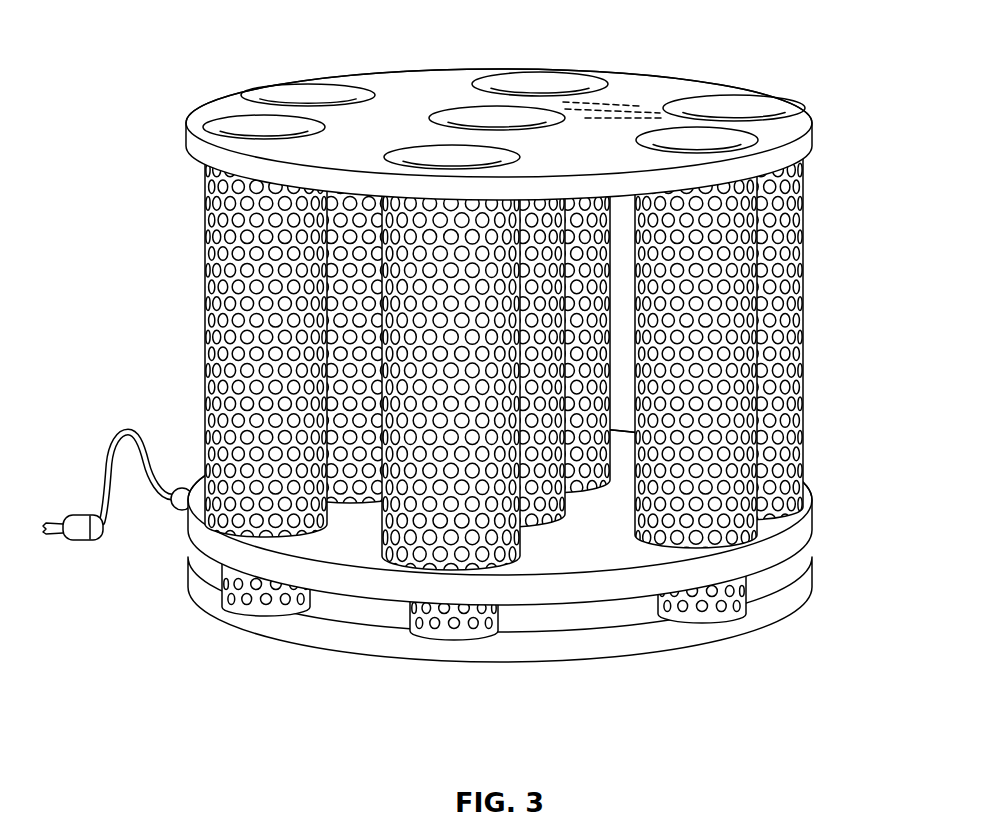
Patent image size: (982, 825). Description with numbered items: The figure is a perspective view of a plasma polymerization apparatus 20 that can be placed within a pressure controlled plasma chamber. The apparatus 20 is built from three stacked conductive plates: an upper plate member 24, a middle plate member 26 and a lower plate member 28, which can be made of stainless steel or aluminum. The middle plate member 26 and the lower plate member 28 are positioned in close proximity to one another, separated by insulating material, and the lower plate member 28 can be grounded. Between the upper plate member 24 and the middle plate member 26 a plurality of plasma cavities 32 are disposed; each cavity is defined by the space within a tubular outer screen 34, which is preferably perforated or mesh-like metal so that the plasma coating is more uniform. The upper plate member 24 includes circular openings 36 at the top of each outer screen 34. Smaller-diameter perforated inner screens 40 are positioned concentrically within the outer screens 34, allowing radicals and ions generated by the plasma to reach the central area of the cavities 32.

The plasma polymerization apparatus 20 is at (457, 357).
The upper plate member 24 is at (516, 101).
The middle plate member 26 is at (814, 519).
The lower plate member 28 is at (813, 571).
The plasma cavities 32 is at (550, 72).
The outer screens 34 is at (803, 320).
The circular openings 36 is at (222, 118).
The inner screens 40 is at (255, 596).